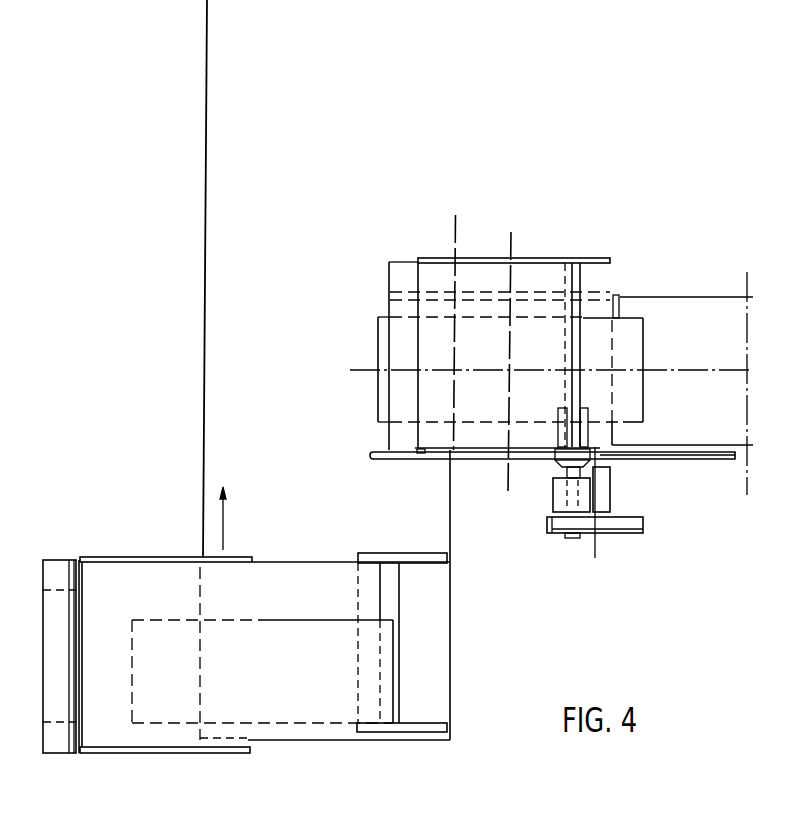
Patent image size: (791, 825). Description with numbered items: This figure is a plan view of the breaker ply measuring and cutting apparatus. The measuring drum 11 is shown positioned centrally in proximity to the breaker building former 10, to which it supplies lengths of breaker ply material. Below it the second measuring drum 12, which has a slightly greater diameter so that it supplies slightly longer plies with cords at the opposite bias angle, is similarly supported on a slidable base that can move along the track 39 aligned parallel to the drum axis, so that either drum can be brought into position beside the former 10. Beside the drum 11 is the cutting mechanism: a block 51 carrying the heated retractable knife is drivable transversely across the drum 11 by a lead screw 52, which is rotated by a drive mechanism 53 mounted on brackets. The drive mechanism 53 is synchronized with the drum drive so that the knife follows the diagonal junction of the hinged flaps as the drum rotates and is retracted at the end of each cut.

The breaker building former 10 is at (648, 300).
The measuring drum 11 is at (378, 405).
The second measuring drum 12 is at (298, 712).
The track 39 is at (212, 288).
The block 51 is at (562, 418).
The lead screw 52 is at (583, 278).
The drive mechanism 53 is at (557, 533).